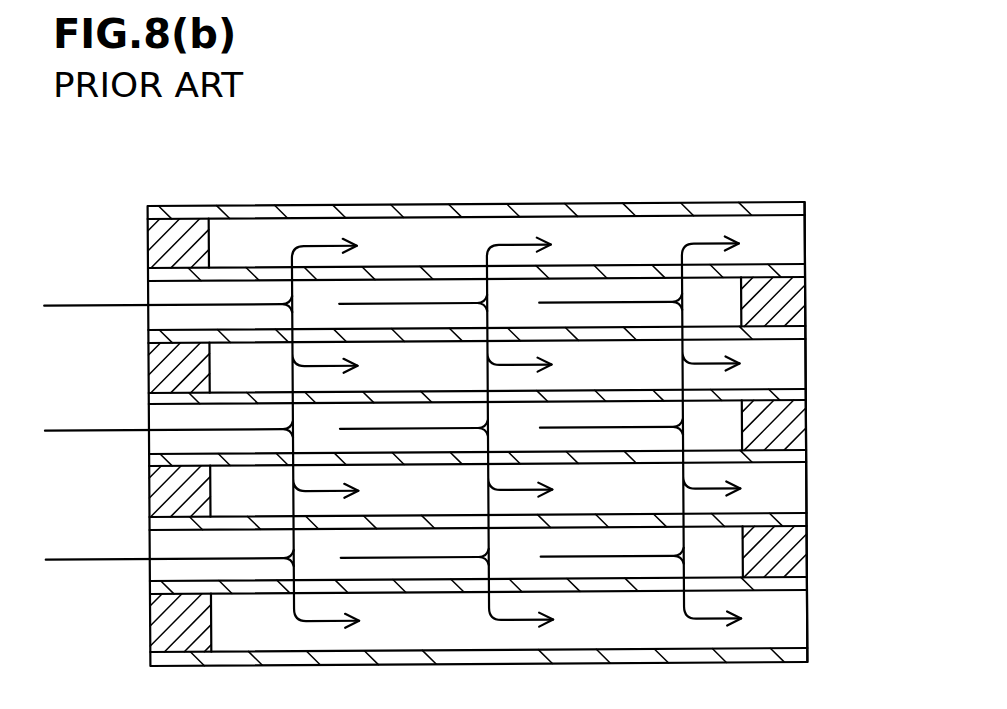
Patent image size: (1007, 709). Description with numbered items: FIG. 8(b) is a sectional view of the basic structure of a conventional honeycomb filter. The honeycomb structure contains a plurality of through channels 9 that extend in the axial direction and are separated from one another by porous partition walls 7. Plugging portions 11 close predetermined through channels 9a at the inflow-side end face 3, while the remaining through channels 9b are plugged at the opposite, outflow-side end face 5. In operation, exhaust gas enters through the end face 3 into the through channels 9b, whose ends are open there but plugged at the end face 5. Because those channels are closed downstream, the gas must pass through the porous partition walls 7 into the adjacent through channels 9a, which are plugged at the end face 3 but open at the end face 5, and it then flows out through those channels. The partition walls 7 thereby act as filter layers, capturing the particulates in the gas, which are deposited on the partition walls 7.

The end face 3 is at (149, 445).
The end face 5 is at (808, 483).
The partition wall 7 is at (578, 272).
The through channel 9 is at (511, 323).
The through channel 9a is at (392, 243).
The through channel 9b is at (460, 300).
The plugging portion 11 is at (840, 288).